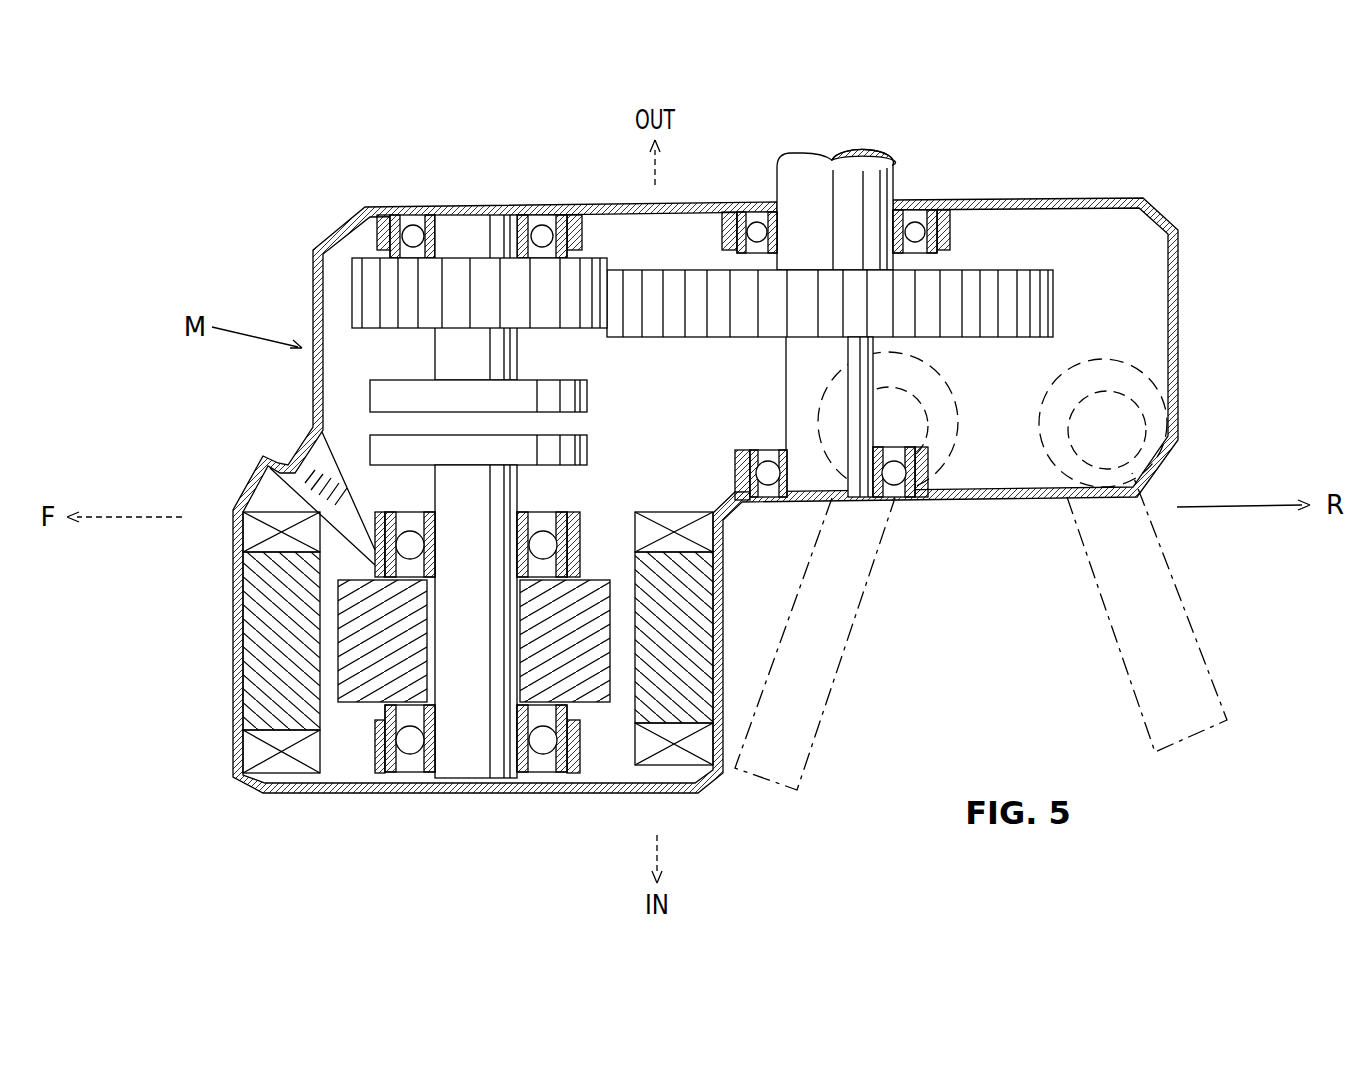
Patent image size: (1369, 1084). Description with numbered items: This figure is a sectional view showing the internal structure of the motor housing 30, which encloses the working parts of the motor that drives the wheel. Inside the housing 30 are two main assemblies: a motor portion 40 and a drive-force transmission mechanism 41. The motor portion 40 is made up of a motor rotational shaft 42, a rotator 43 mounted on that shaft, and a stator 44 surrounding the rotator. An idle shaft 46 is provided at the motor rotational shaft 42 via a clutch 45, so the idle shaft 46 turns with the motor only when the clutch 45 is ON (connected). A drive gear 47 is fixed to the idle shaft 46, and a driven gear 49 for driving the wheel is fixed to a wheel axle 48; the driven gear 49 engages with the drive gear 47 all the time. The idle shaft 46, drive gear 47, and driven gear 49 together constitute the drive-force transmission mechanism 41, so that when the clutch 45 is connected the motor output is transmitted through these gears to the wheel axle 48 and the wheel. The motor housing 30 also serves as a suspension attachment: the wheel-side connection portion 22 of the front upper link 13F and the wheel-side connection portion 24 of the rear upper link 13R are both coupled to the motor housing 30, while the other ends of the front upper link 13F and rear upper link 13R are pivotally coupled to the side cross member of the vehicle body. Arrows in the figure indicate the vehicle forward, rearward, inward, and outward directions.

The motor housing 30 is at (335, 223).
The idle shaft 46 is at (475, 232).
The drive gear 47 is at (352, 292).
The clutch 45 is at (348, 403).
The rotator 43 is at (363, 625).
The stator 44 is at (263, 682).
The motor portion 40 is at (433, 666).
The motor rotational shaft 42 is at (455, 760).
The drive-force transmission mechanism 41 is at (648, 355).
The wheel axle 48 is at (801, 168).
The driven gear 49 is at (1055, 288).
The wheel-side connection portion 22 is at (915, 355).
The wheel-side connection portion 24 is at (1130, 365).
The front upper link 13F is at (827, 688).
The rear upper link 13R is at (1193, 628).